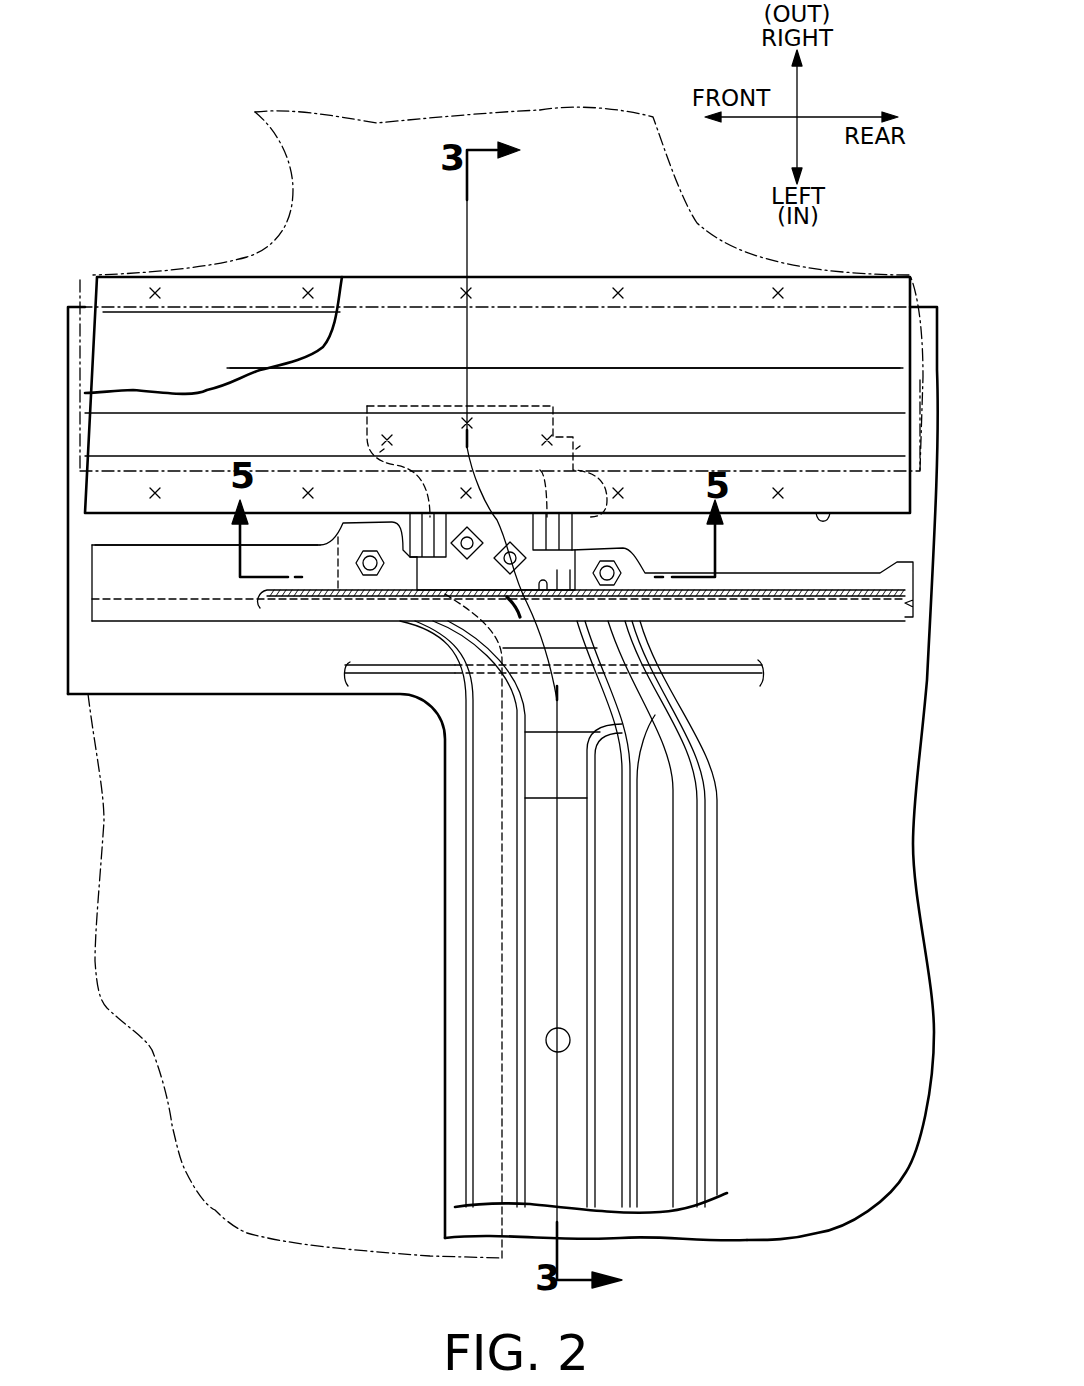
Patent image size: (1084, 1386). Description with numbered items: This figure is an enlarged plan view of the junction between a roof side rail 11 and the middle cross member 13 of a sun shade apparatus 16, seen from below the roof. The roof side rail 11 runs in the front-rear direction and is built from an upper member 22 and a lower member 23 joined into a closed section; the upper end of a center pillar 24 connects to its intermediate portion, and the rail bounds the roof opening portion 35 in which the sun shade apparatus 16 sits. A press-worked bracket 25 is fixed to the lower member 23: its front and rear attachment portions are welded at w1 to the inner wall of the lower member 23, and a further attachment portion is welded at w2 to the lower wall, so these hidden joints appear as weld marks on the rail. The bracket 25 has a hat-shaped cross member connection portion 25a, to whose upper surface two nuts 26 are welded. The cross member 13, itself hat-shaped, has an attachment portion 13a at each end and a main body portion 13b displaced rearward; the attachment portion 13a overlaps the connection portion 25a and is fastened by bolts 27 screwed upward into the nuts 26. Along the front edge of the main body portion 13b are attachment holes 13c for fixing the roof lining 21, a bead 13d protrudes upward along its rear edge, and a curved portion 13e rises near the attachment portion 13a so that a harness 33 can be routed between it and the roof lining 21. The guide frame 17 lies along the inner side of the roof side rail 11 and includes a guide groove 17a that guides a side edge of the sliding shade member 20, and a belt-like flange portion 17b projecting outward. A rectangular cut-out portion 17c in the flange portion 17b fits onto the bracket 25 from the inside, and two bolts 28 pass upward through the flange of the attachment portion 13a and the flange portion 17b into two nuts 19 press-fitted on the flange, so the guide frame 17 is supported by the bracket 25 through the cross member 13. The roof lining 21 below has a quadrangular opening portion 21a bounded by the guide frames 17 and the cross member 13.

The roof side rail 11 is at (432, 197).
The cross member 13 is at (730, 945).
The attachment portion 13a is at (337, 562).
The main body portion 13b is at (537, 1105).
The attachment hole 13c is at (547, 1040).
The bead 13d is at (618, 1088).
The curved portion 13e is at (535, 773).
The sun shade apparatus 16 is at (176, 530).
The guide frame 17 is at (810, 628).
The guide groove 17a is at (292, 600).
The flange portion 17b is at (207, 557).
The cut-out portion 17c is at (522, 608).
The nut 19 is at (372, 556).
The shade member 20 is at (187, 1182).
The roof lining 21 is at (845, 1021).
The opening portion 21a is at (443, 865).
The upper member 22 is at (437, 330).
The lower member 23 is at (245, 330).
The center pillar 24 is at (250, 158).
The bracket 25 is at (583, 432).
The cross member connection portion 25a is at (487, 560).
The nut 26 is at (494, 560).
The bolt 27 is at (478, 535).
The bolt 28 is at (370, 578).
The harness 33 is at (713, 675).
The roof opening portion 35 is at (830, 513).
The weld w1 is at (382, 450).
The weld w2 is at (390, 435).